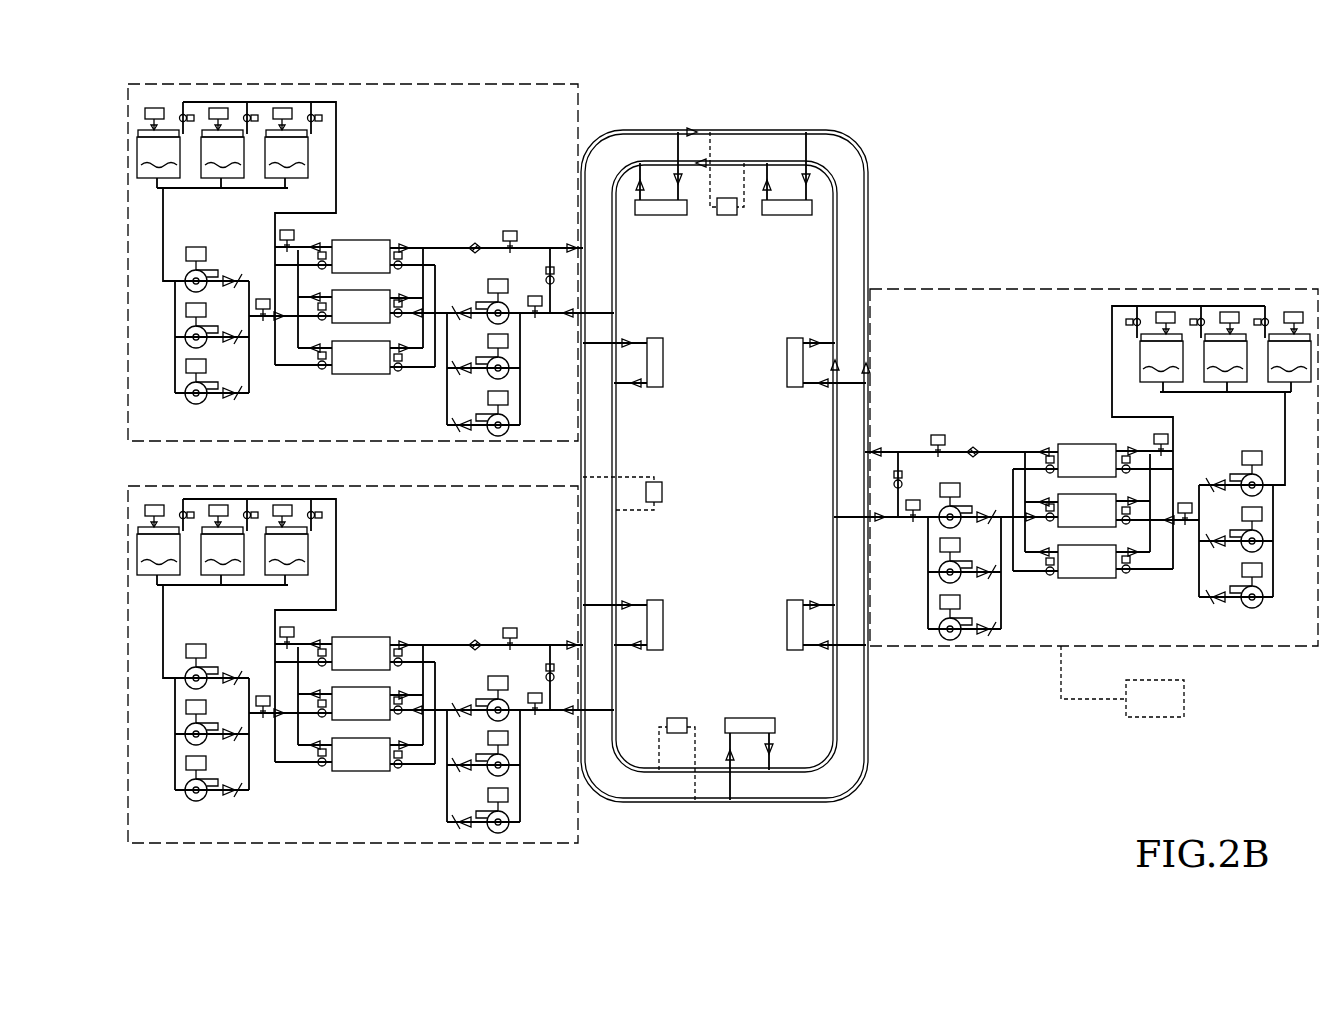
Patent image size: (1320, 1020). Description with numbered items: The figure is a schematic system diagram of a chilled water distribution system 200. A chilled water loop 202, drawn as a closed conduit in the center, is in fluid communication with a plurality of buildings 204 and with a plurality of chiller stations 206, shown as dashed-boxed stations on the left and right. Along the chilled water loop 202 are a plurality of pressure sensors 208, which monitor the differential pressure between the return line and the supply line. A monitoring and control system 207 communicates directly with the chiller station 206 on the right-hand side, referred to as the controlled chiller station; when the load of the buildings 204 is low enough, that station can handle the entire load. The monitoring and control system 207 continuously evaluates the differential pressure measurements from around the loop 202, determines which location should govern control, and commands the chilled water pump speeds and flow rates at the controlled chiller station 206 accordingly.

The chilled water distribution system 200 is at (723, 465).
The chilled water loop 202 is at (783, 484).
The buildings 204 is at (664, 366).
The chiller stations 206 is at (225, 441).
The monitoring and control system 207 is at (1158, 718).
The pressure sensors 208 is at (726, 216).